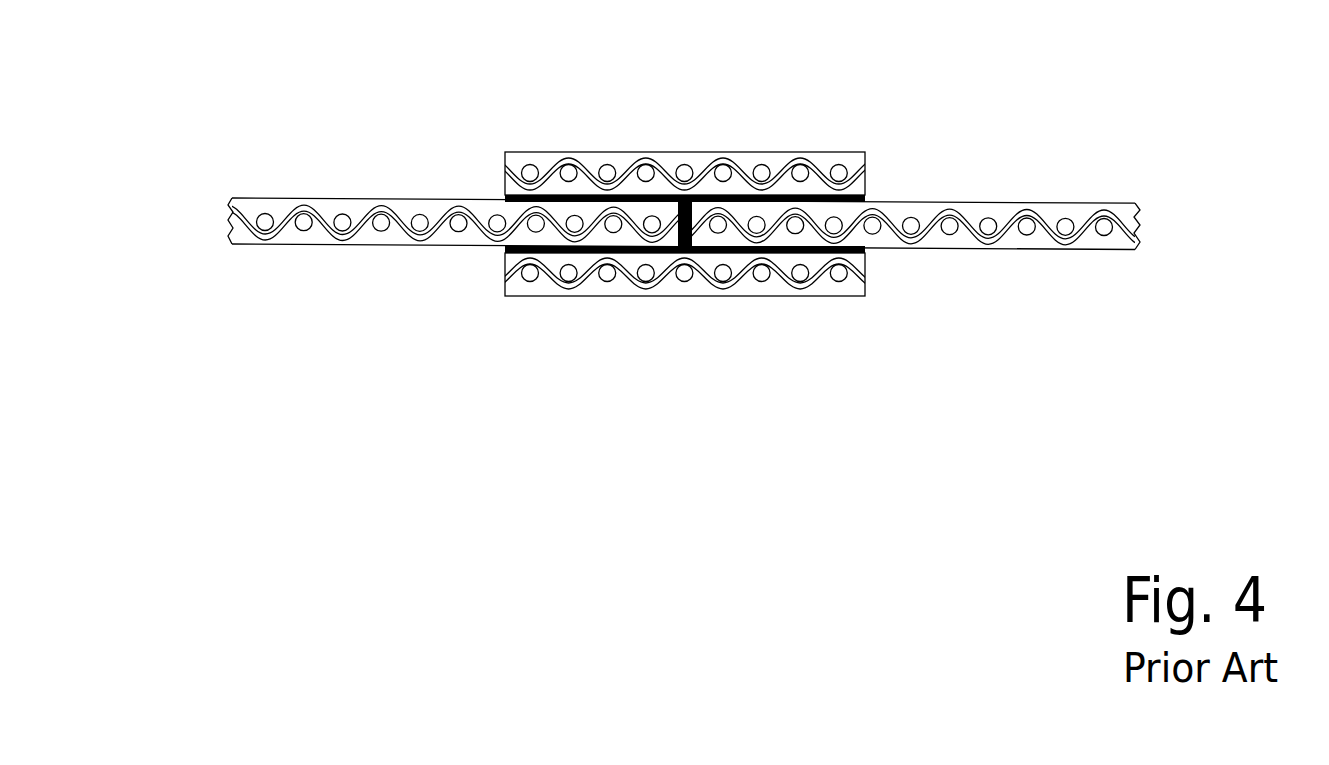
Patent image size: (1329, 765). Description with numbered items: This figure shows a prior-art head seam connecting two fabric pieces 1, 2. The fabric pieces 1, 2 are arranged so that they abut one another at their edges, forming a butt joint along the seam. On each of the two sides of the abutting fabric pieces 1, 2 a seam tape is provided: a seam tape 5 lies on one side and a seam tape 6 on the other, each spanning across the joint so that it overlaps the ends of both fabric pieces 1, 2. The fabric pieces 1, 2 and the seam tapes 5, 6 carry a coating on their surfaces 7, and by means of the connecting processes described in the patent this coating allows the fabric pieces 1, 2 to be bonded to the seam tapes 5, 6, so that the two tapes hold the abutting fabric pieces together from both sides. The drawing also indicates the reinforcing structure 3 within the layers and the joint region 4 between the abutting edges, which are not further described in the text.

The fabric piece 1 is at (1143, 235).
The fabric piece 2 is at (228, 222).
The tension cords 3 is at (564, 170).
The butt joint filler 4 is at (689, 199).
The seam tape 5 is at (711, 111).
The seam tape 6 is at (870, 278).
The surface 7 is at (400, 196).